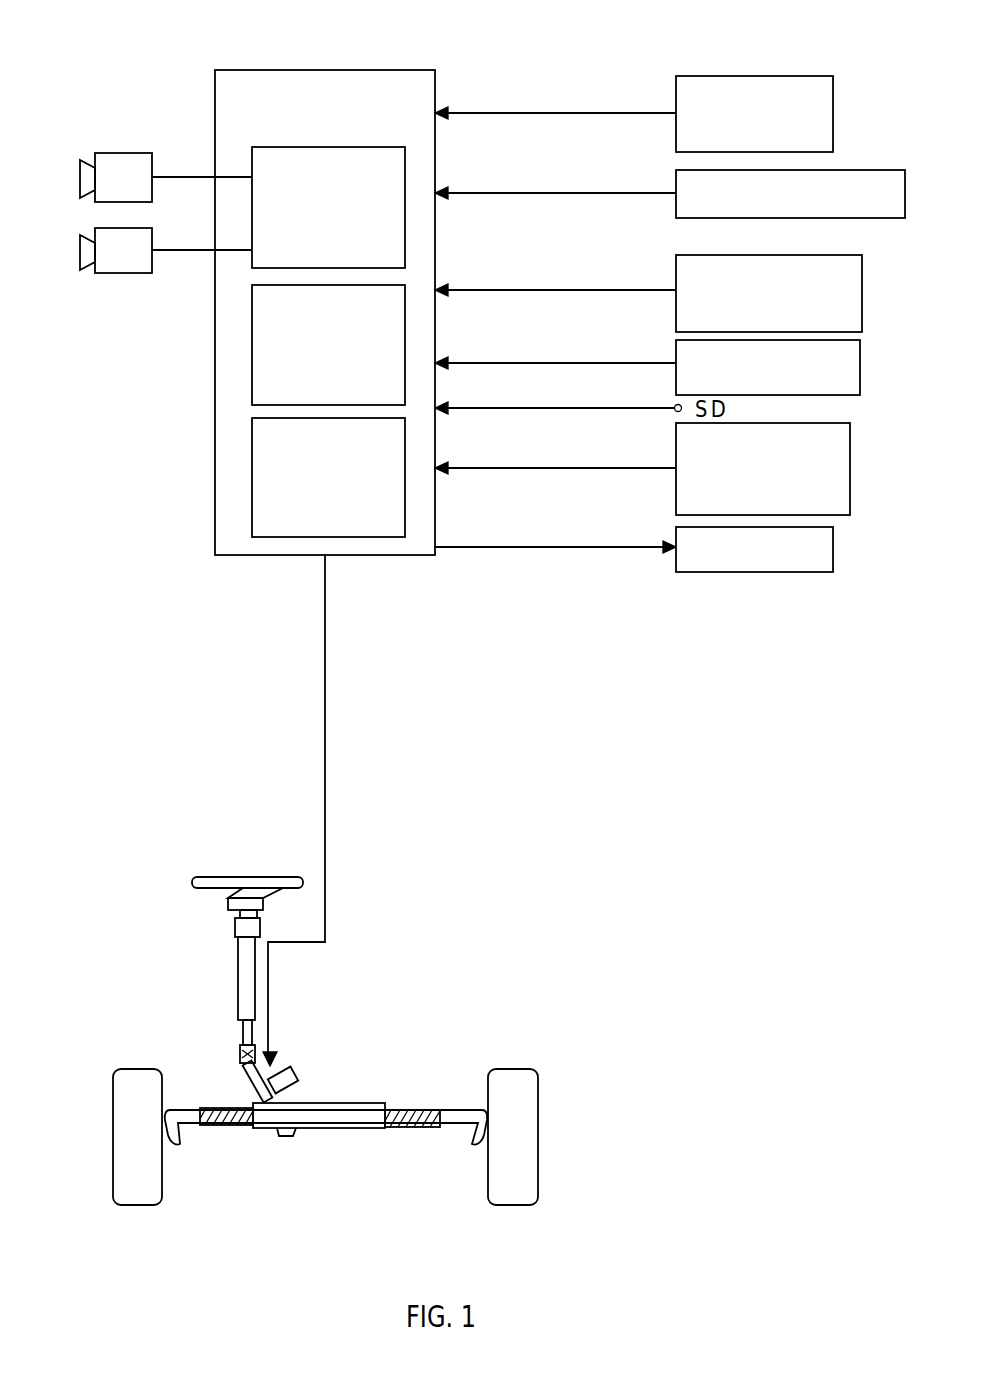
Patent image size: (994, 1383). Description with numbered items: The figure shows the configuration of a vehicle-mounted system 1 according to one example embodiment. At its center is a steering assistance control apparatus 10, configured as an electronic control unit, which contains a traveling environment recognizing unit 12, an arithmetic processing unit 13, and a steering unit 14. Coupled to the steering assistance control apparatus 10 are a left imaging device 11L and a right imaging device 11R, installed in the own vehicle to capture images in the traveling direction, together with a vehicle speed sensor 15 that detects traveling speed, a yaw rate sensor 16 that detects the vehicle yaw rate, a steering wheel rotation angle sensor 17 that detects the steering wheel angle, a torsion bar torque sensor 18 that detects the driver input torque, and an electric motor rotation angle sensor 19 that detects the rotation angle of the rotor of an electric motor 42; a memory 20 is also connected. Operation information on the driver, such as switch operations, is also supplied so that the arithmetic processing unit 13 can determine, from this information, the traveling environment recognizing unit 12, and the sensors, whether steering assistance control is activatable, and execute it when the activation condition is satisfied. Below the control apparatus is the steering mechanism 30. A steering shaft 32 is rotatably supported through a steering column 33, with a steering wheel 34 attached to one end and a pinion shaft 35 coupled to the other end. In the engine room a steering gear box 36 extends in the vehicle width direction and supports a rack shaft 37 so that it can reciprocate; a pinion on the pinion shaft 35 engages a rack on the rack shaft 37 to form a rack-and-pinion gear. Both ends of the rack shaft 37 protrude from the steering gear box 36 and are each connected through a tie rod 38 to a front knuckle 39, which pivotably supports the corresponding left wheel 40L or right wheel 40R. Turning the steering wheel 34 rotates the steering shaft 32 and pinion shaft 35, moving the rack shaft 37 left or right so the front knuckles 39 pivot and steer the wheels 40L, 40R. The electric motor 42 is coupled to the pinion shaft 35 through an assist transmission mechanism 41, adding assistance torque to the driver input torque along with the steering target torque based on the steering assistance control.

The vehicle-mounted system 1 is at (685, 1229).
The steering assistance control apparatus 10 is at (388, 70).
The imaging device 11L is at (125, 153).
The imaging device 11R is at (105, 273).
The traveling environment recognizing unit 12 is at (256, 147).
The arithmetic processing unit 13 is at (252, 357).
The steering unit 14 is at (252, 483).
The vehicle speed sensor 15 is at (833, 114).
The yaw rate sensor 16 is at (873, 218).
The steering wheel rotation angle sensor 17 is at (862, 292).
The torsion bar torque sensor 18 is at (860, 368).
The electric motor rotation angle sensor 19 is at (850, 465).
The memory 20 is at (833, 548).
The steering mechanism 30 is at (114, 971).
The steering shaft 32 is at (243, 1035).
The steering column 33 is at (238, 975).
The steering wheel 34 is at (215, 877).
The pinion shaft 35 is at (234, 1092).
The steering gear box 36 is at (340, 1128).
The rack shaft 37 is at (385, 1103).
The tie rod 38 is at (190, 1128).
The front knuckle 39 is at (172, 1147).
The left wheel 40L is at (513, 1205).
The right wheel 40R is at (137, 1205).
The assist transmission mechanism 41 is at (247, 1098).
The electric motor 42 is at (296, 1073).